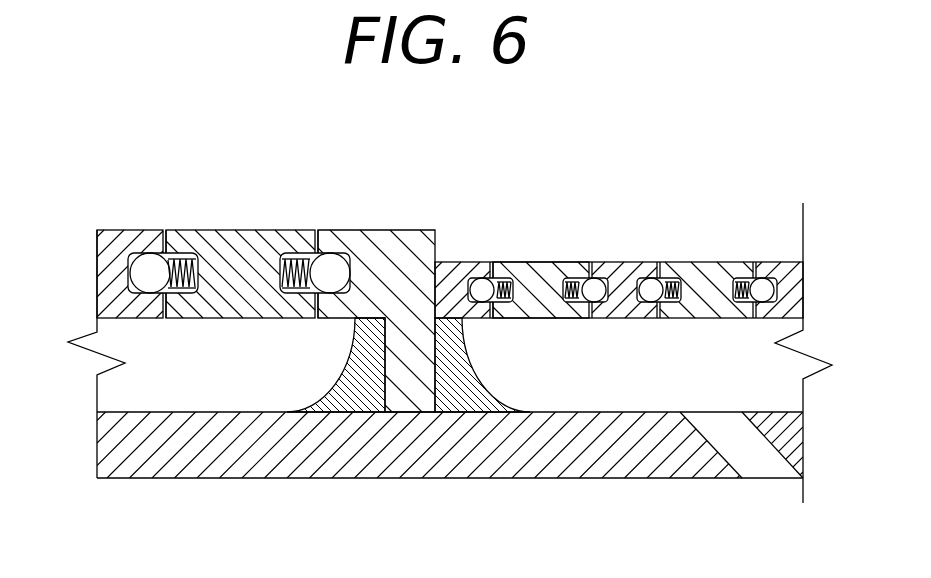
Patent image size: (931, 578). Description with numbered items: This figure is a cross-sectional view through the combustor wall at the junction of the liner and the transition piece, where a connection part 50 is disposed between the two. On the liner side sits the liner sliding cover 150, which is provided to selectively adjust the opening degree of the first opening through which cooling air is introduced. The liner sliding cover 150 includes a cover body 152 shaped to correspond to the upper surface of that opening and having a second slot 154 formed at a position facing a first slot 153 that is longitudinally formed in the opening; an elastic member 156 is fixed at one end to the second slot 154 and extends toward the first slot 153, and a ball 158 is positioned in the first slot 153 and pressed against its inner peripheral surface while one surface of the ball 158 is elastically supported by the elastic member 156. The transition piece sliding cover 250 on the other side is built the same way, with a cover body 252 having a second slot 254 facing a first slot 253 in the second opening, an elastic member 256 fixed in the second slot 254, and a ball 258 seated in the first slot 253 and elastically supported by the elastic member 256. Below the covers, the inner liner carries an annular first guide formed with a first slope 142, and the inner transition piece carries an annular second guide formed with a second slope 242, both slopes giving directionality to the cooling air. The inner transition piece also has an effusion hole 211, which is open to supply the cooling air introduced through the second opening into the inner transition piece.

The connection part 50 is at (237, 275).
The liner sliding cover 150 is at (234, 275).
The cover body 152 is at (262, 230).
The first slot 153 is at (128, 269).
The second slot 154 is at (200, 270).
The elastic member 156 is at (183, 265).
The ball 158 is at (148, 262).
The first slope 142 is at (334, 379).
The transition piece sliding cover 250 is at (619, 241).
The cover body 252 is at (705, 262).
The first slot 253 is at (462, 283).
The second slot 254 is at (514, 293).
The elastic member 256 is at (556, 283).
The ball 258 is at (655, 283).
The second slope 242 is at (480, 359).
The effusion hole 211 is at (750, 466).